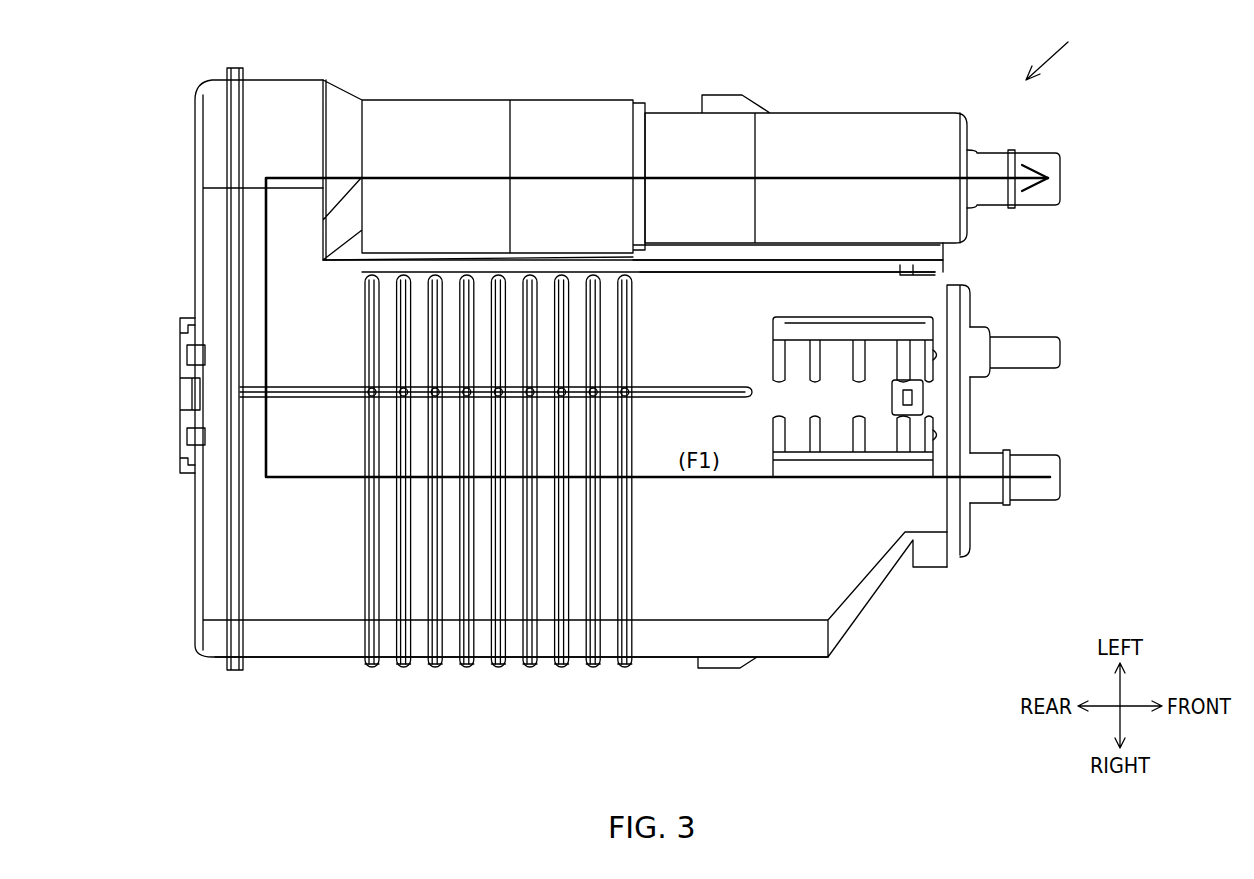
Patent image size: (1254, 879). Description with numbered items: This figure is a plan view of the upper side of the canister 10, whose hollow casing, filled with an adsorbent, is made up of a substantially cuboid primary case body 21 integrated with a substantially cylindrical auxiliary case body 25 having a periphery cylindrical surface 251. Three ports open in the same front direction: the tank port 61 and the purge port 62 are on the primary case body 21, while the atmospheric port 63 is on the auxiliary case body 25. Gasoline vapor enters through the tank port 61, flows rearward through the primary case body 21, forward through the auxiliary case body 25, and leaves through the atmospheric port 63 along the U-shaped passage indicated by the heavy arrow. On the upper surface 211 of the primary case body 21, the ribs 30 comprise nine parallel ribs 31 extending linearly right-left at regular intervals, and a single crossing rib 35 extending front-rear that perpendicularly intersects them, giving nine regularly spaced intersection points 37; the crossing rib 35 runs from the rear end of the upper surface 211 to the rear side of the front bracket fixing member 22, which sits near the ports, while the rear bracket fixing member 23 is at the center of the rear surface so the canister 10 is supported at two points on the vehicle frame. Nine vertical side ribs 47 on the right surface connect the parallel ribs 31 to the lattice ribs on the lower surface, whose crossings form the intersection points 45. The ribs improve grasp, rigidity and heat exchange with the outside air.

The canister 10 is at (1060, 49).
The primary case body 21 is at (855, 560).
The upper surface 211 is at (683, 600).
The front bracket fixing member 22 is at (900, 463).
The rear bracket fixing member 23 is at (180, 340).
The auxiliary case body 25 is at (852, 135).
The periphery cylindrical surface 251 is at (575, 125).
The ribs 30 is at (424, 471).
The parallel ribs 31 is at (461, 517).
The crossing rib 35 is at (318, 395).
The intersection points 37 is at (435, 388).
The intersection points 45 is at (922, 255).
The side ribs 47 is at (372, 668).
The tank port 61 is at (1065, 477).
The purge port 62 is at (1065, 352).
The atmospheric port 63 is at (1063, 178).